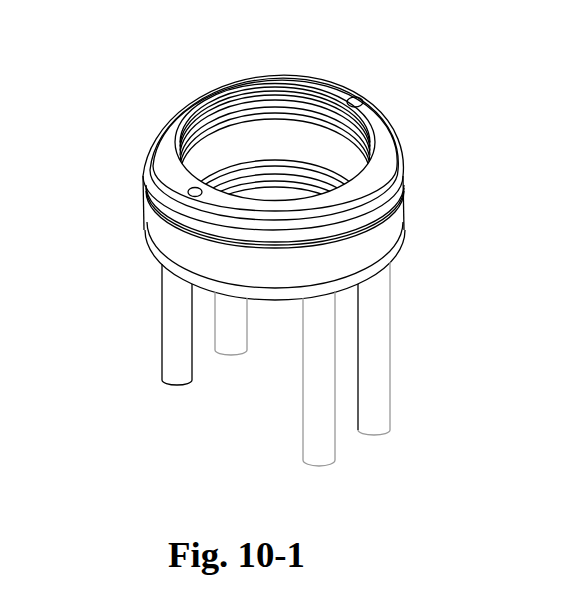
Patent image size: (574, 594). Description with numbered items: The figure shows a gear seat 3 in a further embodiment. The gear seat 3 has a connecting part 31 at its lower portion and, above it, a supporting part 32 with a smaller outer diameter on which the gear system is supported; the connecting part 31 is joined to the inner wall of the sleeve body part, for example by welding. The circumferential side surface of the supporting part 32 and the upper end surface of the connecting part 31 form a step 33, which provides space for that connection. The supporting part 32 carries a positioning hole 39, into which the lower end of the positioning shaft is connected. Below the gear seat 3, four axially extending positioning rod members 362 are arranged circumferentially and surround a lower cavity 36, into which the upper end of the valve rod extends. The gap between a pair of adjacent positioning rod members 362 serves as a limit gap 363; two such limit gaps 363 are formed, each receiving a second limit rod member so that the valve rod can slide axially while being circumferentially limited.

The gear seat 3 is at (119, 156).
The connecting part 31 is at (407, 217).
The supporting part 32 is at (377, 167).
The step 33 is at (408, 192).
The lower cavity 36 is at (280, 345).
The positioning rod member 362 is at (373, 382).
The limit gap 363 is at (347, 338).
The positioning hole 39 is at (365, 100).